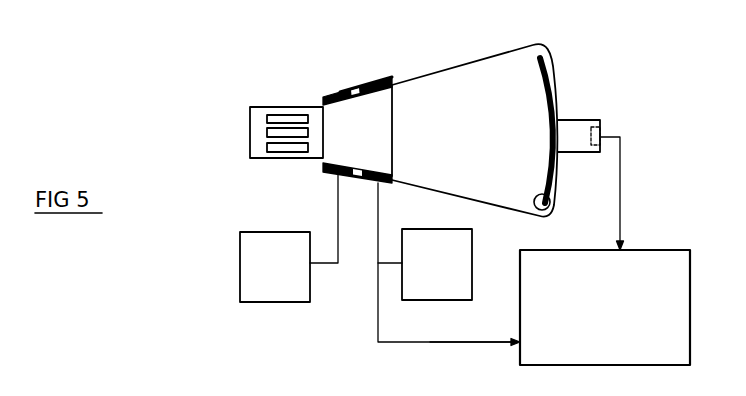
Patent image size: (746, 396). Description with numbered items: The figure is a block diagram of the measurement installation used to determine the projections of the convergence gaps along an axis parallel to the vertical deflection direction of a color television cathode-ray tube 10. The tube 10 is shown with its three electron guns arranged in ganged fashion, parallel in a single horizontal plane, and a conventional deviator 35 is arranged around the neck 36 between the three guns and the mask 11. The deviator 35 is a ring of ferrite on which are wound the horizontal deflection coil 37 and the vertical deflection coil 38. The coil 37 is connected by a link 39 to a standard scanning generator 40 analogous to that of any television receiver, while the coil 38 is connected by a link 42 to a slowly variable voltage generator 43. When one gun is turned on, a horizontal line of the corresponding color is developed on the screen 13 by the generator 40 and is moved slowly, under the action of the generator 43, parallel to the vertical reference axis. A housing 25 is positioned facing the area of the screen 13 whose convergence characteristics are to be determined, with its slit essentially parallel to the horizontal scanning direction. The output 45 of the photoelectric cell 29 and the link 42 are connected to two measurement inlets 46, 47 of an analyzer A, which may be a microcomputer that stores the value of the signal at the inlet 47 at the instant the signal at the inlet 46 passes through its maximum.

The television cathode-ray tube 10 is at (484, 58).
The mask 11 is at (552, 217).
The screen 13 is at (557, 70).
The housing 25 is at (578, 120).
The photoelectric cell 29 is at (600, 127).
The deviator 35 is at (401, 132).
The neck 36 is at (273, 119).
The horizontal deflection coil 37 is at (336, 96).
The vertical deflection coil 38 is at (371, 82).
The link 39 is at (336, 190).
The standard scanning generator 40 is at (289, 237).
The link 42 is at (379, 227).
The slowly variable voltage generator 43 is at (425, 264).
The output 45 is at (605, 130).
The measurement inlet 46 is at (626, 246).
The measurement inlet 47 is at (515, 334).